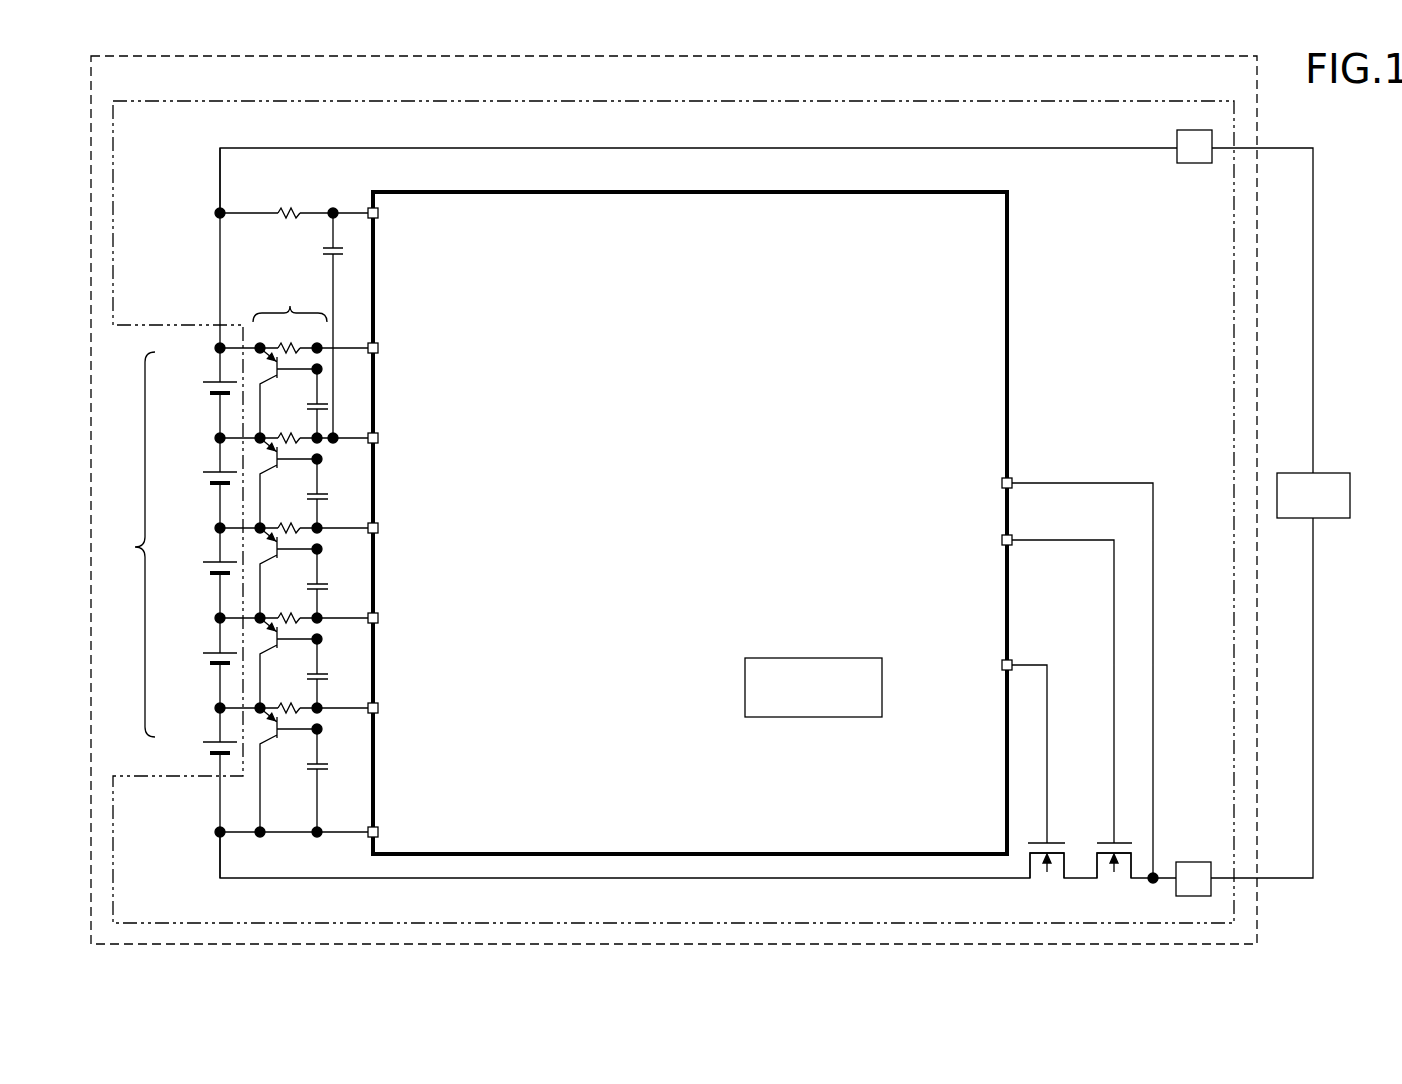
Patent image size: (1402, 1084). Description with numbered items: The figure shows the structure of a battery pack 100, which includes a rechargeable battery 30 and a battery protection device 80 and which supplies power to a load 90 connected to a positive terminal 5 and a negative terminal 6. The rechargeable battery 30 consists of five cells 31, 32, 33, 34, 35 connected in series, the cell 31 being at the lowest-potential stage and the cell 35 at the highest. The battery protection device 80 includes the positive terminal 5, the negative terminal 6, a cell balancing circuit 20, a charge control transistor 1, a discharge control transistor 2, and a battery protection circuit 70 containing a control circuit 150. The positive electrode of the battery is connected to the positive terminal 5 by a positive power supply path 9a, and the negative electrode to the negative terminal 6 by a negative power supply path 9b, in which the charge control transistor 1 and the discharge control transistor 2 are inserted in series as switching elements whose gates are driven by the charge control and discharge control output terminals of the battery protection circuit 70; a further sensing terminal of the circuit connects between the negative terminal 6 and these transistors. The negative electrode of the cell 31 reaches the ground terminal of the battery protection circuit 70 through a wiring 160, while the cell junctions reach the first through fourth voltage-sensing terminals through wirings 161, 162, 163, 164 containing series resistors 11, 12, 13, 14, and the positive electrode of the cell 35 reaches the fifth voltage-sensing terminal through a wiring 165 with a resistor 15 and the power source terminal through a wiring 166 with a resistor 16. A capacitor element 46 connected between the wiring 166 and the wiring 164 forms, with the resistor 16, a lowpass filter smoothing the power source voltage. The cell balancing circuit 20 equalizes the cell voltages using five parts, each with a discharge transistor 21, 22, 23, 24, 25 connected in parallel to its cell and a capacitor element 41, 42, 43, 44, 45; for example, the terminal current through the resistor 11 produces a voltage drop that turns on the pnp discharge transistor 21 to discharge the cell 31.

The battery pack 100 is at (772, 57).
The battery protection device 80 is at (772, 102).
The battery protection circuit 70 is at (770, 192).
The control circuit 150 is at (815, 657).
The positive power supply path 9a is at (770, 147).
The negative power supply path 9b is at (768, 879).
The positive terminal 5 is at (1196, 165).
The negative terminal 6 is at (1195, 860).
The charge control transistor 1 is at (1124, 842).
The discharge control transistor 2 is at (1056, 842).
The load 90 is at (1322, 472).
The rechargeable battery 30 is at (132, 544).
The cell 31 is at (212, 742).
The cell 32 is at (212, 653).
The cell 33 is at (212, 562).
The cell 34 is at (212, 472).
The cell 35 is at (212, 382).
The cell balancing circuit 20 is at (290, 300).
The discharge transistor 21 is at (270, 742).
The discharge transistor 22 is at (270, 652).
The discharge transistor 23 is at (270, 562).
The discharge transistor 24 is at (270, 472).
The discharge transistor 25 is at (270, 382).
The resistor 11 is at (302, 704).
The resistor 12 is at (302, 614).
The resistor 13 is at (302, 524).
The resistor 14 is at (302, 434).
The resistor 15 is at (300, 343).
The resistor 16 is at (300, 211).
The capacitor element 41 is at (310, 769).
The capacitor element 42 is at (310, 679).
The capacitor element 43 is at (310, 589).
The capacitor element 44 is at (310, 499).
The capacitor element 45 is at (310, 409).
The capacitor element 46 is at (326, 250).
The wiring 160 is at (352, 834).
The wiring 161 is at (352, 711).
The wiring 162 is at (352, 621).
The wiring 163 is at (352, 531).
The wiring 164 is at (352, 441).
The wiring 165 is at (350, 351).
The wiring 166 is at (246, 220).